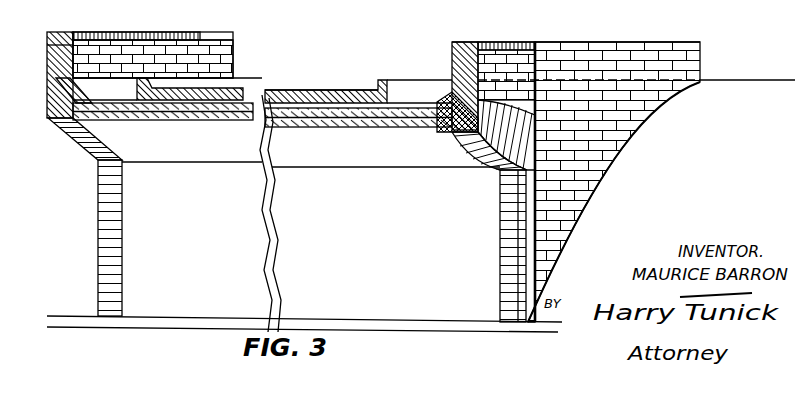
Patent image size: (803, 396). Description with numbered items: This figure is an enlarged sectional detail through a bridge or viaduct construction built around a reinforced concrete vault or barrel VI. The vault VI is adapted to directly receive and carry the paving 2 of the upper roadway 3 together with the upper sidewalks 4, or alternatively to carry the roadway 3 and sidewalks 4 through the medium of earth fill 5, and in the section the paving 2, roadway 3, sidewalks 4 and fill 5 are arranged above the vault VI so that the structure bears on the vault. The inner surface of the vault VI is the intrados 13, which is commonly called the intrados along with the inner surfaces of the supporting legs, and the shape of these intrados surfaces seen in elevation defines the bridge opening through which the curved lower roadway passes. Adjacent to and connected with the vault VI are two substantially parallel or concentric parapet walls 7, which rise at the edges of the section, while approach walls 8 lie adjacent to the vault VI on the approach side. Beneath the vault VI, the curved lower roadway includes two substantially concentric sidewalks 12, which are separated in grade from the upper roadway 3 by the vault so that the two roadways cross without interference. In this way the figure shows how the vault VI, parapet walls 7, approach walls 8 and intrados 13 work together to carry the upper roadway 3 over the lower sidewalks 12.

The paving 2 is at (302, 89).
The upper roadway 3 is at (339, 90).
The upper sidewalks 4 is at (116, 72).
The earth fill 5 is at (113, 98).
The parapet walls 7 is at (48, 56).
The approach walls 8 is at (607, 62).
The sidewalks 12 is at (392, 317).
The intrados 13 is at (303, 156).
The vault VI is at (331, 128).